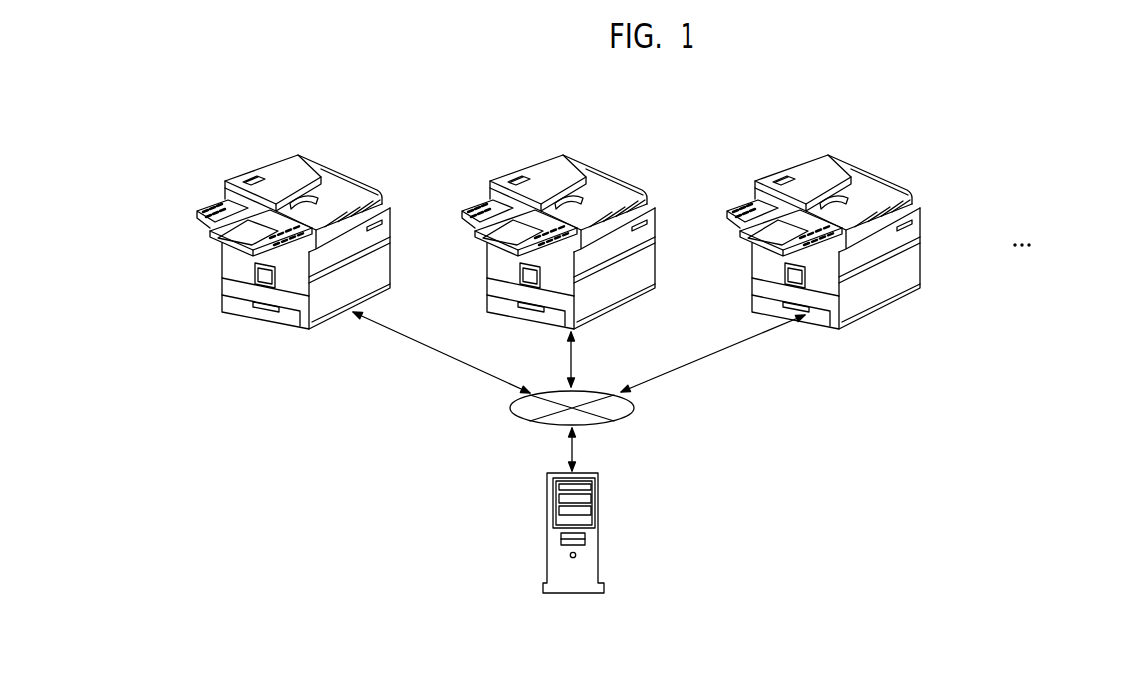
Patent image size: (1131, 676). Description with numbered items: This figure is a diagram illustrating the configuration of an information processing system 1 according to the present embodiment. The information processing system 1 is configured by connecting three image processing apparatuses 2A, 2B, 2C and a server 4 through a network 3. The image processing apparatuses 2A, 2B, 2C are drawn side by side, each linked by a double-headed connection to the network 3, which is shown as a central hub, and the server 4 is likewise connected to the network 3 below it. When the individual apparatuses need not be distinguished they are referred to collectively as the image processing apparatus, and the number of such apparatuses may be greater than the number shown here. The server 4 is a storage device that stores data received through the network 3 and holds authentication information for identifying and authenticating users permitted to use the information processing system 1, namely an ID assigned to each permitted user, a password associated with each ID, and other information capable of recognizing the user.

The information processing system 1 is at (1058, 108).
The image processing apparatus 2A is at (380, 191).
The image processing apparatus 2B is at (645, 191).
The image processing apparatus 2C is at (910, 191).
The network 3 is at (541, 427).
The server 4 is at (596, 545).